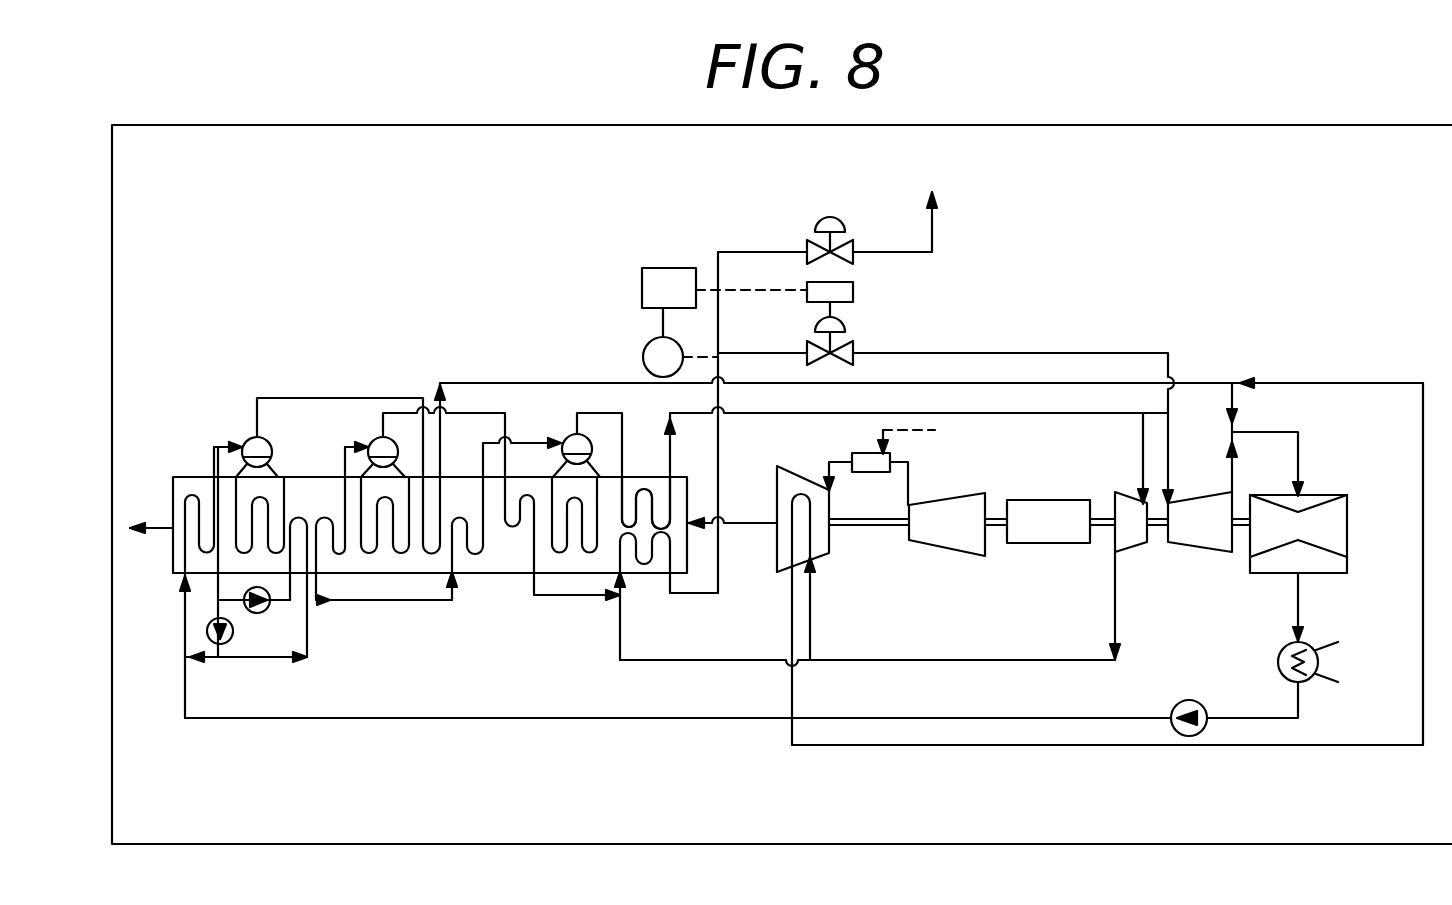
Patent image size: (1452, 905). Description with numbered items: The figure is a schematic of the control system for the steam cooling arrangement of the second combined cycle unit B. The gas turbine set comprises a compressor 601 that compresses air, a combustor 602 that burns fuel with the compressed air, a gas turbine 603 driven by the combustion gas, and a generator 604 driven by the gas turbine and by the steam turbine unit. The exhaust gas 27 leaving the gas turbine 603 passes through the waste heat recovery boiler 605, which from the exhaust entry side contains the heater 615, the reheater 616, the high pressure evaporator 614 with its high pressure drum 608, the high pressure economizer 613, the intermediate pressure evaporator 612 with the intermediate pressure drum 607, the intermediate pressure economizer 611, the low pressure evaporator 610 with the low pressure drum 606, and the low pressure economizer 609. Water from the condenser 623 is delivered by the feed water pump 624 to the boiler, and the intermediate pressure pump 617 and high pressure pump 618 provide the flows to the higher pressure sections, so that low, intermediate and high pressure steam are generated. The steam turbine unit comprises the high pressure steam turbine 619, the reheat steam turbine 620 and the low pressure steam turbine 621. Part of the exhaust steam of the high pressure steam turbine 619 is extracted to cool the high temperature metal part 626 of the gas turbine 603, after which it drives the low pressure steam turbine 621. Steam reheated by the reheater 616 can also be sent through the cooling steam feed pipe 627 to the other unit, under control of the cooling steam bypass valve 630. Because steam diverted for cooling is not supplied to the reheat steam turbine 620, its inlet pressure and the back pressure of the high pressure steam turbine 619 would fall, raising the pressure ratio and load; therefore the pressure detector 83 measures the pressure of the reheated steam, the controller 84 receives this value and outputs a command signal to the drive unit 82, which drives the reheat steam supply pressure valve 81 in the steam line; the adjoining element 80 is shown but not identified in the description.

The exhaust gas 27 is at (738, 527).
The steam supply line 80 is at (1022, 353).
The reheat steam supply pressure valve 81 is at (845, 325).
The drive unit 82 is at (833, 291).
The pressure detector 83 is at (650, 357).
The controller 84 is at (670, 285).
The compressor 601 is at (943, 532).
The combustor 602 is at (873, 463).
The gas turbine 603 is at (820, 533).
The generator 604 is at (1045, 530).
The waste heat recovery boiler 605 is at (201, 492).
The low pressure drum 606 is at (257, 436).
The intermediate pressure drum 607 is at (381, 437).
The high pressure drum 608 is at (567, 437).
The low pressure economizer 609 is at (186, 496).
The low pressure evaporator 610 is at (264, 502).
The intermediate pressure economizer 611 is at (341, 553).
The intermediate pressure evaporator 612 is at (385, 553).
The high pressure economizer 613 is at (481, 550).
The high pressure evaporator 614 is at (577, 548).
The heater 615 is at (643, 492).
The reheater 616 is at (646, 548).
The intermediate pressure pump 617 is at (207, 631).
The high pressure pump 618 is at (263, 613).
The high pressure steam turbine 619 is at (1127, 532).
The reheat steam turbine 620 is at (1200, 535).
The low pressure steam turbine 621 is at (1318, 525).
The condenser 623 is at (1318, 660).
The feed water pump 624 is at (1200, 703).
The high temperature metal part 626 is at (805, 497).
The cooling steam feed pipe 627 is at (933, 237).
The cooling steam bypass valve 630 is at (831, 217).
The second combined cycle unit B is at (1327, 845).